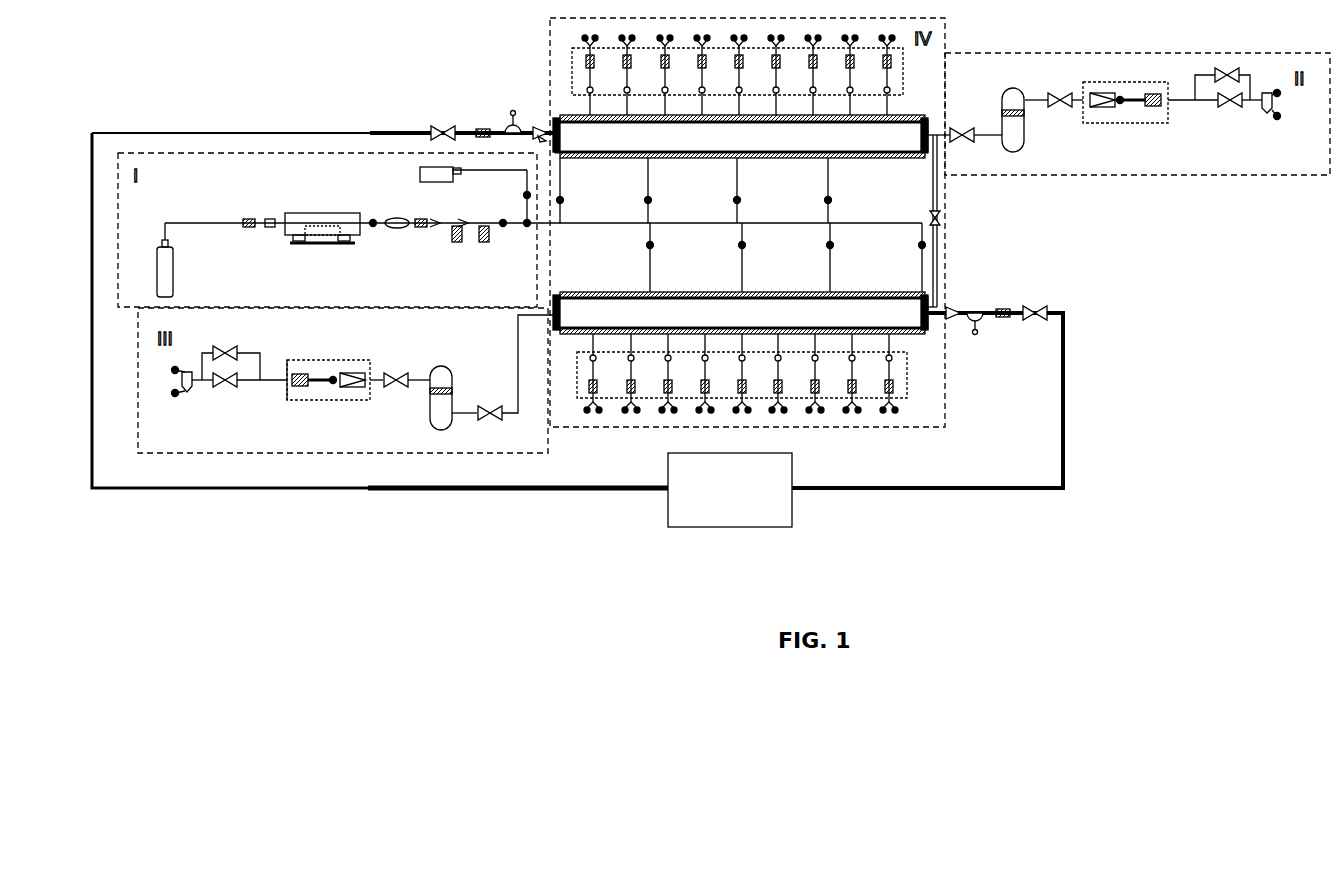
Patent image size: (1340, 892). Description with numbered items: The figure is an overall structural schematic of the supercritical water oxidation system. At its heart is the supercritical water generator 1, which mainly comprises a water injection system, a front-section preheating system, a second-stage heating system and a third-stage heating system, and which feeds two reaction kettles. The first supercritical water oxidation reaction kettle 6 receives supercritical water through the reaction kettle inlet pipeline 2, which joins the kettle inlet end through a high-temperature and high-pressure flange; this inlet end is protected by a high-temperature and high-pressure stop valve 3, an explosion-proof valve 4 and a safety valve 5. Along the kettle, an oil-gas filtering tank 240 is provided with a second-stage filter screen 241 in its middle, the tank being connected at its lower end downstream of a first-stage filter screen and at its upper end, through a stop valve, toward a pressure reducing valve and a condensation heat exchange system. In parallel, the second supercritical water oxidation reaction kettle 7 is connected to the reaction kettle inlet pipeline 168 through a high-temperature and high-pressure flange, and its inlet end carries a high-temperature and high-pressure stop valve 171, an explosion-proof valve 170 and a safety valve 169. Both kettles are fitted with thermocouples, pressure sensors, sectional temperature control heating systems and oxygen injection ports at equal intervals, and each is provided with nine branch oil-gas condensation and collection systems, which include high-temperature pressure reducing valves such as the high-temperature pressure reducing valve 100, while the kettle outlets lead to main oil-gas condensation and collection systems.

The supercritical water generator 1 is at (729, 504).
The reaction kettle inlet pipeline 2 is at (90, 318).
The high-temperature and high-pressure stop valve 3 is at (440, 128).
The explosion-proof valve 4 is at (510, 127).
The safety valve 5 is at (537, 128).
The first supercritical water oxidation reaction kettle 6 is at (877, 135).
The second supercritical water oxidation reaction kettle 7 is at (905, 312).
The high-temperature pressure reducing valve 100 is at (577, 380).
The reaction kettle inlet pipeline 168 is at (1036, 486).
The safety valve 169 is at (949, 308).
The explosion-proof valve 170 is at (978, 324).
The high-temperature and high-pressure stop valve 171 is at (1038, 322).
The oil-gas filtering tank 240 is at (480, 129).
The second-stage filter screen 241 is at (1005, 308).